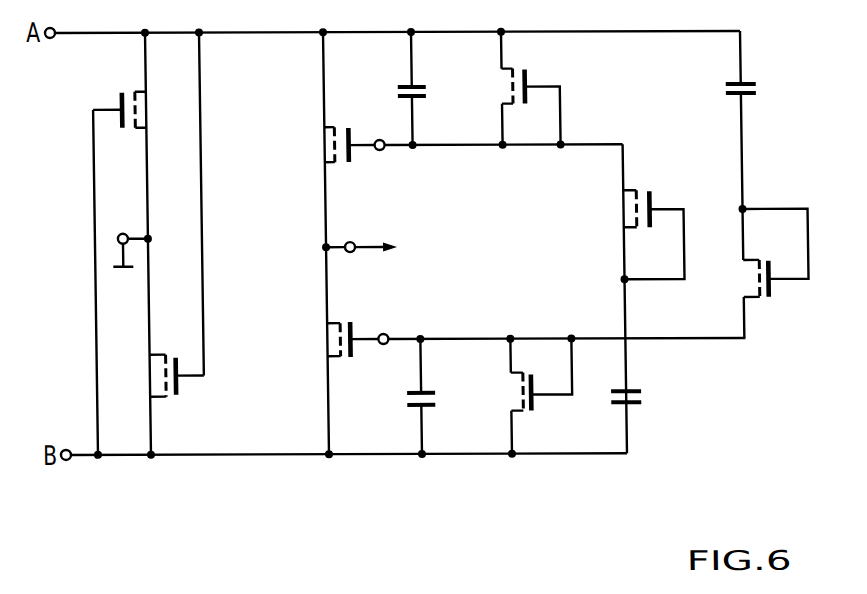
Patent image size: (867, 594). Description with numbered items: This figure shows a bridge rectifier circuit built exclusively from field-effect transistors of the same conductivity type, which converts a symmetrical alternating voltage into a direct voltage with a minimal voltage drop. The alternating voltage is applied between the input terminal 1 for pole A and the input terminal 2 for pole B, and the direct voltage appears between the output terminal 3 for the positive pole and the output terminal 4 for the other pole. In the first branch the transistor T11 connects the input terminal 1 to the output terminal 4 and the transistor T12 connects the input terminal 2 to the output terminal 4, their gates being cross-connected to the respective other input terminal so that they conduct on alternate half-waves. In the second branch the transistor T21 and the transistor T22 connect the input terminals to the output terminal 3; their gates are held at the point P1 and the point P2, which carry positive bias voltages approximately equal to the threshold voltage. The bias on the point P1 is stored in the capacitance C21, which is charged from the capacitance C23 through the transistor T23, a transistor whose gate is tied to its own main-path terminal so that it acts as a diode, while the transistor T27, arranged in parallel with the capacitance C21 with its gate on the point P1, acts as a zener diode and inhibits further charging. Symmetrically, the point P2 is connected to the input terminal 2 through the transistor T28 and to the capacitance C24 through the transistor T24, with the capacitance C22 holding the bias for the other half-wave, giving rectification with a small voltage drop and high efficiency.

The input terminal 1 is at (53, 41).
The input terminal 2 is at (54, 420).
The output terminal 3 is at (348, 238).
The output terminal 4 is at (118, 228).
The transistor T11 is at (141, 109).
The transistor T12 is at (153, 375).
The transistor T21 is at (324, 145).
The transistor T22 is at (331, 340).
The field-effect transistor T23 is at (646, 204).
The transistor T24 is at (750, 280).
The field-effect transistor T27 is at (512, 87).
The field-effect transistor T28 is at (518, 395).
The capacitance C21 is at (399, 92).
The capacitance C22 is at (403, 398).
The capacitance C23 is at (640, 400).
The capacitance C24 is at (756, 88).
The point P1 is at (381, 152).
The point P2 is at (380, 333).